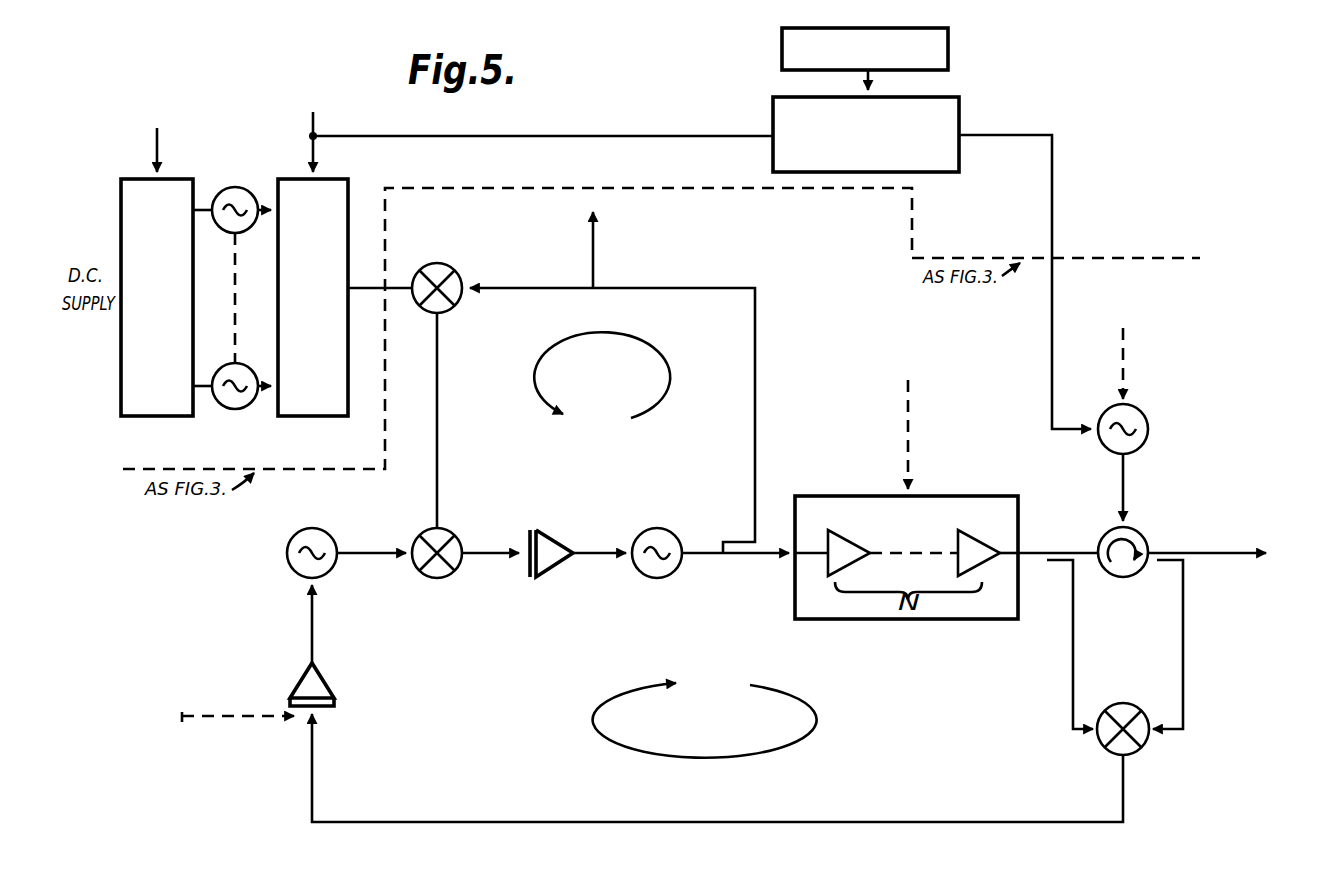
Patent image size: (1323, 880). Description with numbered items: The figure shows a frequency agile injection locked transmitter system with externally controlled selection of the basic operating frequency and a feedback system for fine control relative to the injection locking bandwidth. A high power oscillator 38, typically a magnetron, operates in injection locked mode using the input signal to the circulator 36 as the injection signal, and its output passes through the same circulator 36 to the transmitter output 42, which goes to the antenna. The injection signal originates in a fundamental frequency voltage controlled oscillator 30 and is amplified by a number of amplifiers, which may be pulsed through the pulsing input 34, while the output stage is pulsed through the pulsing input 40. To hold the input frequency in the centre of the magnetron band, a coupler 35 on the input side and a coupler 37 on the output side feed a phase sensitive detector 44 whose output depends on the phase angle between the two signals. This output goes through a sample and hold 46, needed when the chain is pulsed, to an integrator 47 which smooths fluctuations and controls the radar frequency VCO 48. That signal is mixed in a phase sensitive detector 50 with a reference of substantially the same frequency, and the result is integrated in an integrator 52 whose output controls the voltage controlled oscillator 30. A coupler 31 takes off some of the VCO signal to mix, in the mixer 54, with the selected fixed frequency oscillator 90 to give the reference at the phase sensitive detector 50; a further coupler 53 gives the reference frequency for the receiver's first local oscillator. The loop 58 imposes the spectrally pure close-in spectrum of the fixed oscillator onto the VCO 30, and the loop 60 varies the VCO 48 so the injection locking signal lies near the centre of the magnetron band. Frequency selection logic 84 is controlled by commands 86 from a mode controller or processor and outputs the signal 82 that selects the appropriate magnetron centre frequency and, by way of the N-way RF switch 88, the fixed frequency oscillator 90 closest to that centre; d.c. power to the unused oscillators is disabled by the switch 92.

The voltage controlled oscillator 30 is at (662, 528).
The coupler 31 is at (742, 538).
The pulsing input 34 is at (910, 428).
The coupler 35 is at (1057, 563).
The circulator 36 is at (1137, 538).
The coupler 37 is at (1168, 562).
The high power oscillator 38 is at (1148, 440).
The pulsing input 40 is at (1125, 365).
The transmitter output 42 is at (1243, 556).
The phase sensitive detector 44 is at (1106, 750).
The sample and hold 46 is at (230, 735).
The integrator 47 is at (330, 686).
The radar frequency VCO 48 is at (328, 572).
The phase sensitive detector 50 is at (444, 576).
The integrator 52 is at (545, 578).
The coupler 53 is at (612, 283).
The mixer 54 is at (455, 272).
The loop 58 is at (670, 382).
The loop 60 is at (695, 757).
The output signal 82 is at (1052, 142).
The frequency selection logic 84 is at (959, 112).
The commands 86 is at (948, 50).
The N-way RF switch 88 is at (328, 416).
The fixed frequency oscillator 90 is at (240, 178).
The switch 92 is at (143, 416).